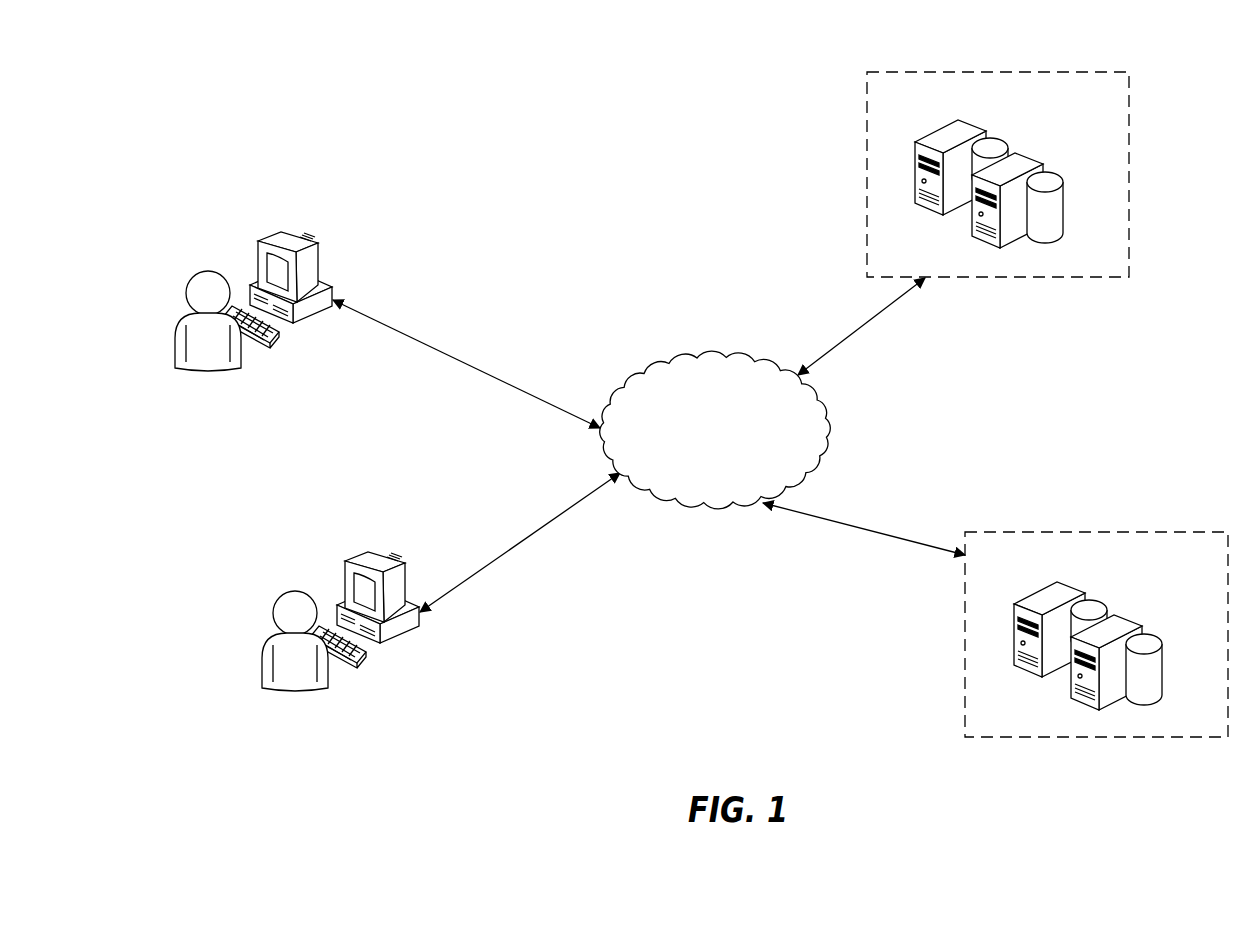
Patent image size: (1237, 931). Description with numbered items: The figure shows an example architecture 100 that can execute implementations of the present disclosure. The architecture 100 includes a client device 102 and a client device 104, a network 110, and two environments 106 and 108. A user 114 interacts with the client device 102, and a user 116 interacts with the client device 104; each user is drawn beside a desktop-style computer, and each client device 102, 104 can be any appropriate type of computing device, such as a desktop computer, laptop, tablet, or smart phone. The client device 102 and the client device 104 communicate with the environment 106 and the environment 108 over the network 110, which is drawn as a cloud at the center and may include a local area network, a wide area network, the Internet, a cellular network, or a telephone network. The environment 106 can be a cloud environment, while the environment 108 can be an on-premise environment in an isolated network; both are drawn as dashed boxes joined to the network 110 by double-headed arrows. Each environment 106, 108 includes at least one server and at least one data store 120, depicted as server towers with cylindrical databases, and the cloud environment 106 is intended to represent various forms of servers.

The architecture 100 is at (567, 120).
The client device 102 is at (267, 242).
The client device 104 is at (355, 562).
The environment 106 is at (1130, 172).
The environment 108 is at (965, 633).
The network 110 is at (710, 356).
The user 114 is at (210, 370).
The user 116 is at (298, 690).
The data store 120 is at (1008, 150).